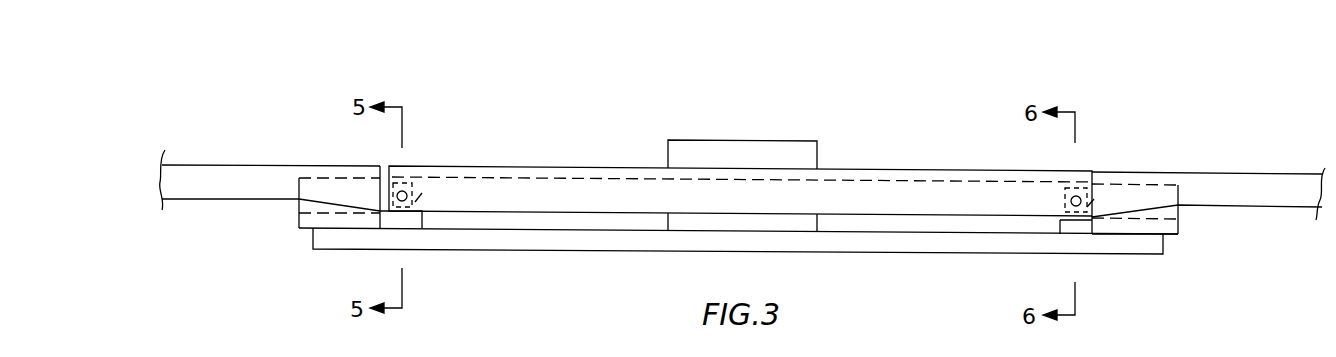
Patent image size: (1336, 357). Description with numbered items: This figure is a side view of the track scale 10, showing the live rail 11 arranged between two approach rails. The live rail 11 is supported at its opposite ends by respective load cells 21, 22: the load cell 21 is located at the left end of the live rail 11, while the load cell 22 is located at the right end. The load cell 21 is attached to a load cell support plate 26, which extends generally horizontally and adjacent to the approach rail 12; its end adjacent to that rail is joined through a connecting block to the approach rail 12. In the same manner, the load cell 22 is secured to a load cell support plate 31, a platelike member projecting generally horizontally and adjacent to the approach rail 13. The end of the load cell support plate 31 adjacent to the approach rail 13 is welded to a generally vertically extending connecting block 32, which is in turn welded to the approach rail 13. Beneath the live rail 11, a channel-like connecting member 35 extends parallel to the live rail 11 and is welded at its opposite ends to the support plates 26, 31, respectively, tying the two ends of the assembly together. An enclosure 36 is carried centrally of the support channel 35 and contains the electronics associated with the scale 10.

The scale 10 is at (876, 116).
The live rail 11 is at (570, 193).
The approach rail 12 is at (213, 182).
The approach rail 13 is at (1222, 185).
The load cell 21 is at (418, 199).
The load cell 22 is at (1090, 203).
The load cell support plate 26 is at (412, 222).
The load cell support plate 31 is at (1085, 232).
The connecting block 32 is at (1169, 228).
The connecting member 35 is at (840, 243).
The enclosure 36 is at (743, 155).